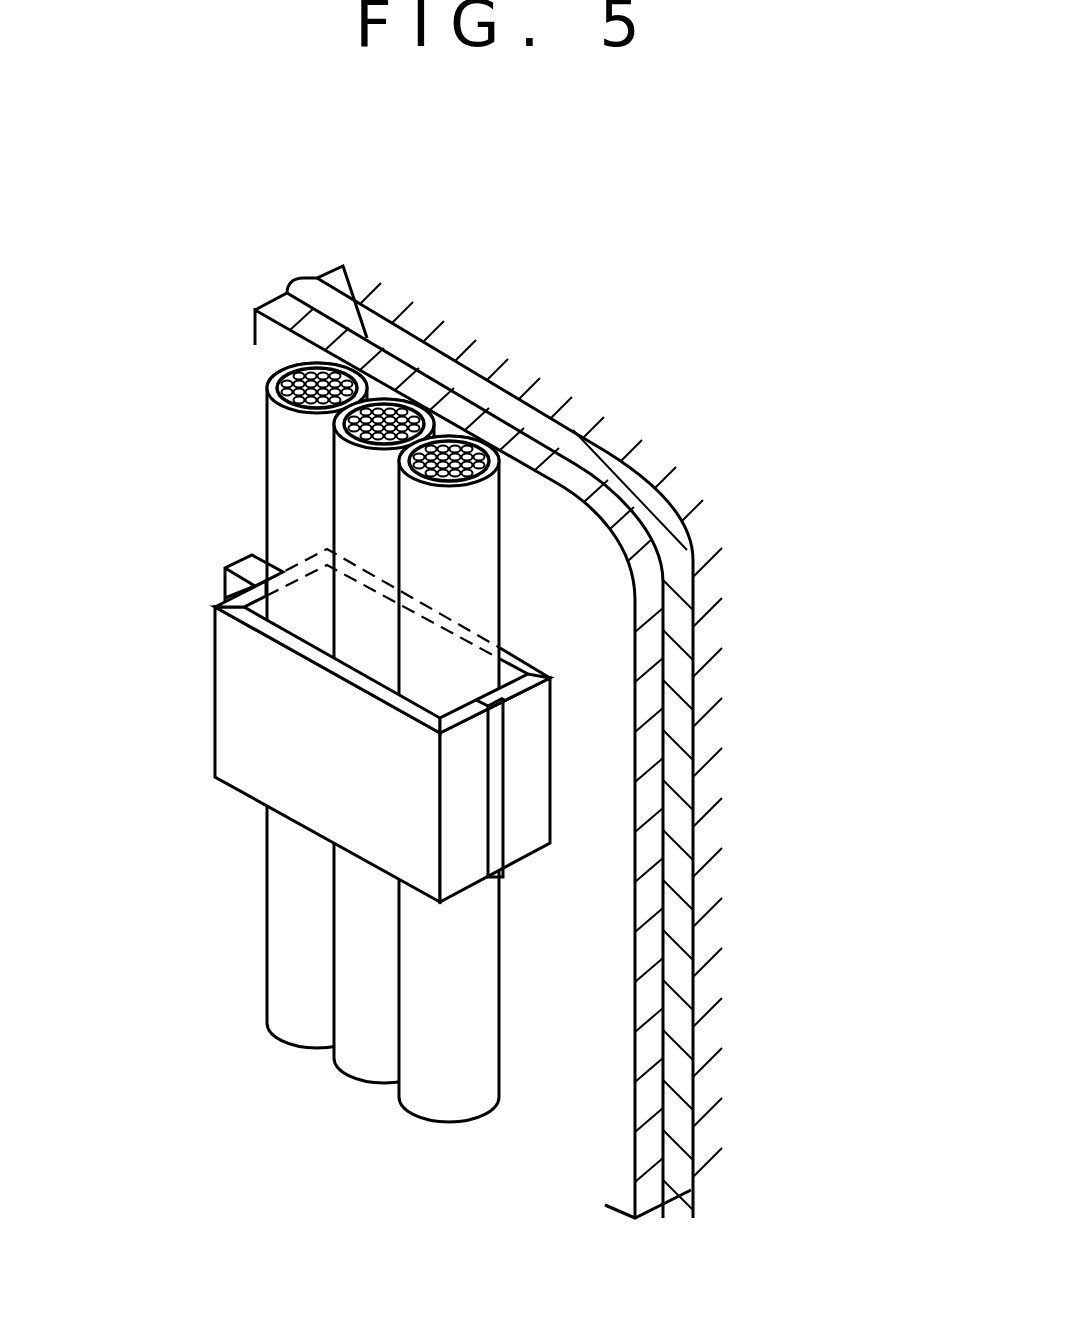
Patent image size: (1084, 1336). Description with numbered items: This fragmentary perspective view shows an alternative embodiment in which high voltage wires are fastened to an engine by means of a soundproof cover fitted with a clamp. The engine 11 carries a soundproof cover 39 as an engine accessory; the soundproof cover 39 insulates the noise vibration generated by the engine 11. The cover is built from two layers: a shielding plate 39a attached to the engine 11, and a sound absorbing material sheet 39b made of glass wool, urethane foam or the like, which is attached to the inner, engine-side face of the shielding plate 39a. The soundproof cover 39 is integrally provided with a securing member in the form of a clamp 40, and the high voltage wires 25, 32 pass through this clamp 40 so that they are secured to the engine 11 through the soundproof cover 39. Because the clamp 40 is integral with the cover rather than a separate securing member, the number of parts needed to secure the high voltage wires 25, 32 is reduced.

The engine 11 is at (579, 779).
The soundproof cover 39 is at (579, 779).
The shielding plate 39a is at (640, 1203).
The sound absorbing material sheet 39b is at (678, 1194).
The high voltage wire 25 is at (368, 775).
The high voltage wire 32 is at (435, 1097).
The clamp 40 is at (237, 706).